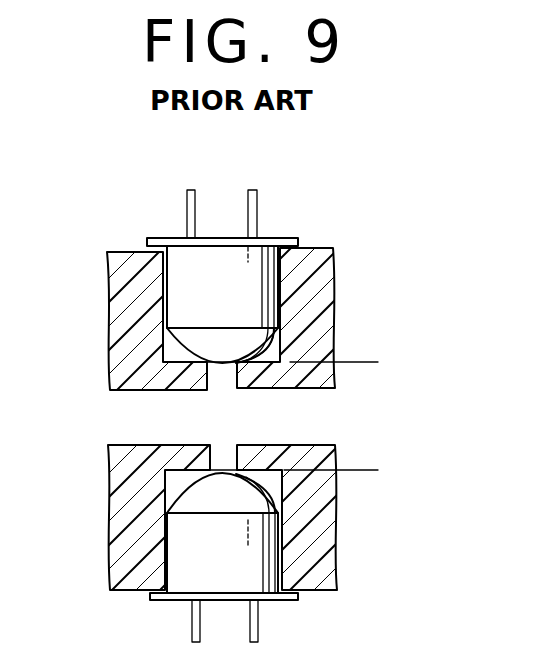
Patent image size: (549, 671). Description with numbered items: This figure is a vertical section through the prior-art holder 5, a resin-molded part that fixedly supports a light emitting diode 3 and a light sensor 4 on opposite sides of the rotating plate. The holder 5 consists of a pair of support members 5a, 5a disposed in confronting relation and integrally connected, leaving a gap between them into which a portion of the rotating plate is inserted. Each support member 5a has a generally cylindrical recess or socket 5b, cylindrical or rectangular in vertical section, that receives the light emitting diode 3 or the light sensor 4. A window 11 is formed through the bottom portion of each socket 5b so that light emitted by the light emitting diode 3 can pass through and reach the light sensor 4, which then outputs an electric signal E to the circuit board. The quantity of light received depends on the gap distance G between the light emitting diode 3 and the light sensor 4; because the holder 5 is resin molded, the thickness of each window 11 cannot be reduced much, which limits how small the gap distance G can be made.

The holder 5 is at (274, 393).
The support member 5a is at (310, 249).
The recess 5b is at (279, 349).
The light emitting diode 3 is at (260, 279).
The light sensor 4 is at (263, 548).
The window 11 is at (213, 382).
The gap distance G is at (372, 362).
The electric signal E is at (258, 622).